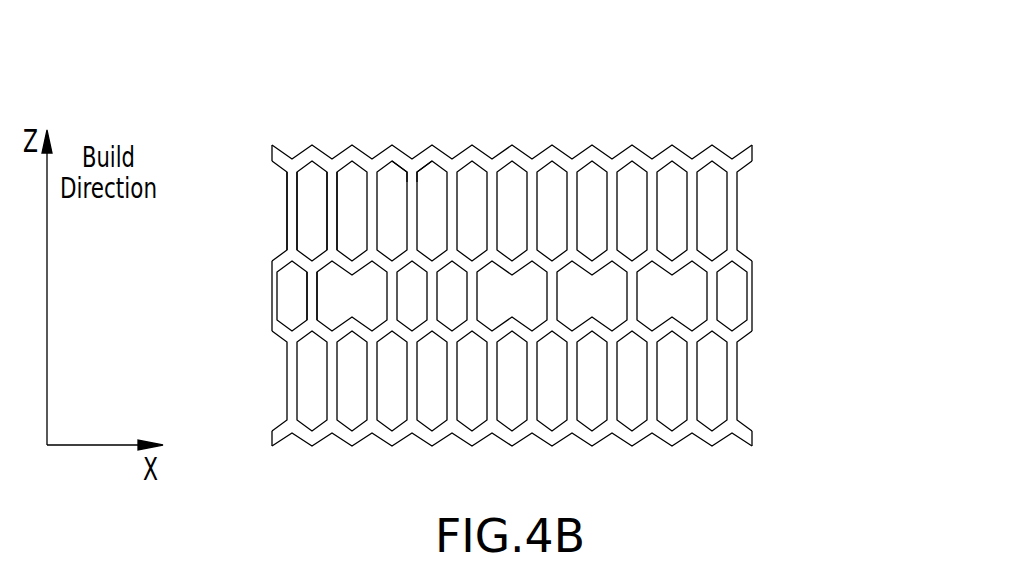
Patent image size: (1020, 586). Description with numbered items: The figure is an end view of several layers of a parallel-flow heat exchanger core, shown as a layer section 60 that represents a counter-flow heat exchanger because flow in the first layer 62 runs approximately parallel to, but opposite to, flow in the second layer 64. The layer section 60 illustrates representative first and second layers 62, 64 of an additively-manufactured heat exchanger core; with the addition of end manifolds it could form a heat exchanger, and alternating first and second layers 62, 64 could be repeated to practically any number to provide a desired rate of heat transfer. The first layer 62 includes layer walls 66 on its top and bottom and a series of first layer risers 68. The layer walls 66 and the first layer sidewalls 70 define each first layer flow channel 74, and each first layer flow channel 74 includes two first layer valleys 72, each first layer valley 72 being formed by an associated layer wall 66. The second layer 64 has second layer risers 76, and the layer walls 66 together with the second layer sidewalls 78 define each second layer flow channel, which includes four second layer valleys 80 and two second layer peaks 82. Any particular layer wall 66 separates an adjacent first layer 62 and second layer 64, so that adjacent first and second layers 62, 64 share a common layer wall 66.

The layer section 60 is at (263, 98).
The first layer 62 is at (781, 201).
The second layer 64 is at (785, 290).
The layer wall 66 is at (274, 154).
The first layer riser 68 is at (290, 207).
The first layer sidewall 70 is at (340, 198).
The first layer valley 72 is at (394, 164).
The first layer flow channel 74 is at (515, 192).
The second layer riser 76 is at (308, 294).
The second layer sidewall 78 is at (387, 290).
The second layer valley 80 is at (412, 261).
The second layer peak 82 is at (433, 268).